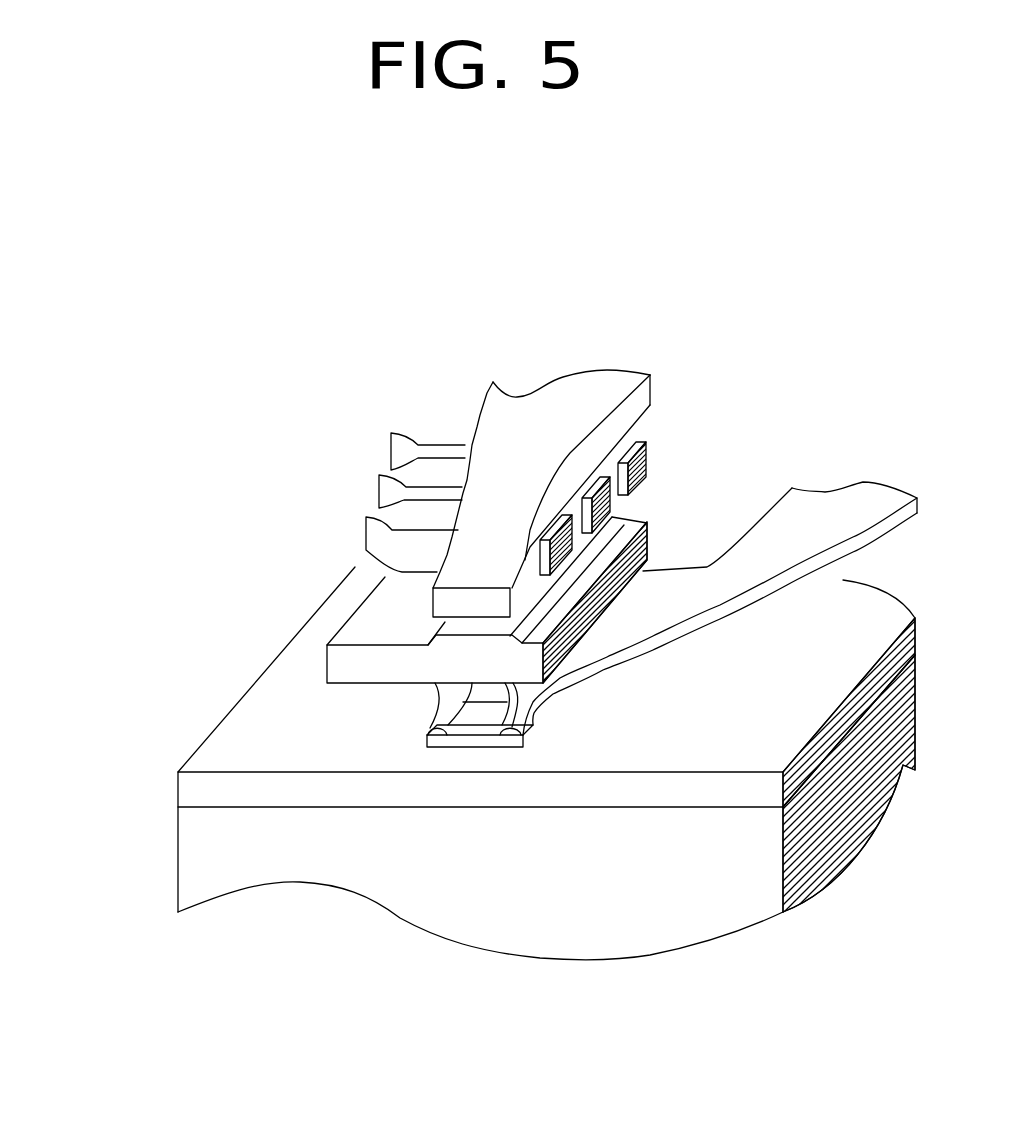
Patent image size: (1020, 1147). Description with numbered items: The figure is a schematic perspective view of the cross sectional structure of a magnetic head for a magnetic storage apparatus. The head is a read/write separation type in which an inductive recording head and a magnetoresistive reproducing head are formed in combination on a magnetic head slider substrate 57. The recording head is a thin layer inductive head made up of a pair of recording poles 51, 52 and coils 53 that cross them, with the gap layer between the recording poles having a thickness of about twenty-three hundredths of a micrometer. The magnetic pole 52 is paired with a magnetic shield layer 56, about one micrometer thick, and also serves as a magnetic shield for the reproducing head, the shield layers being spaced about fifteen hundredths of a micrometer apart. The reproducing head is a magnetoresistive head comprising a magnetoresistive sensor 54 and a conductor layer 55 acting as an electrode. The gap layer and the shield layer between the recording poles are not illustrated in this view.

The recording pole 51 is at (443, 605).
The recording pole 52 is at (327, 674).
The coils 53 is at (397, 460).
The magnetoresistive sensor 54 is at (469, 737).
The conductor layer 55 is at (440, 703).
The magnetic shield layer 56 is at (188, 790).
The magnetic head slider substrate 57 is at (628, 933).